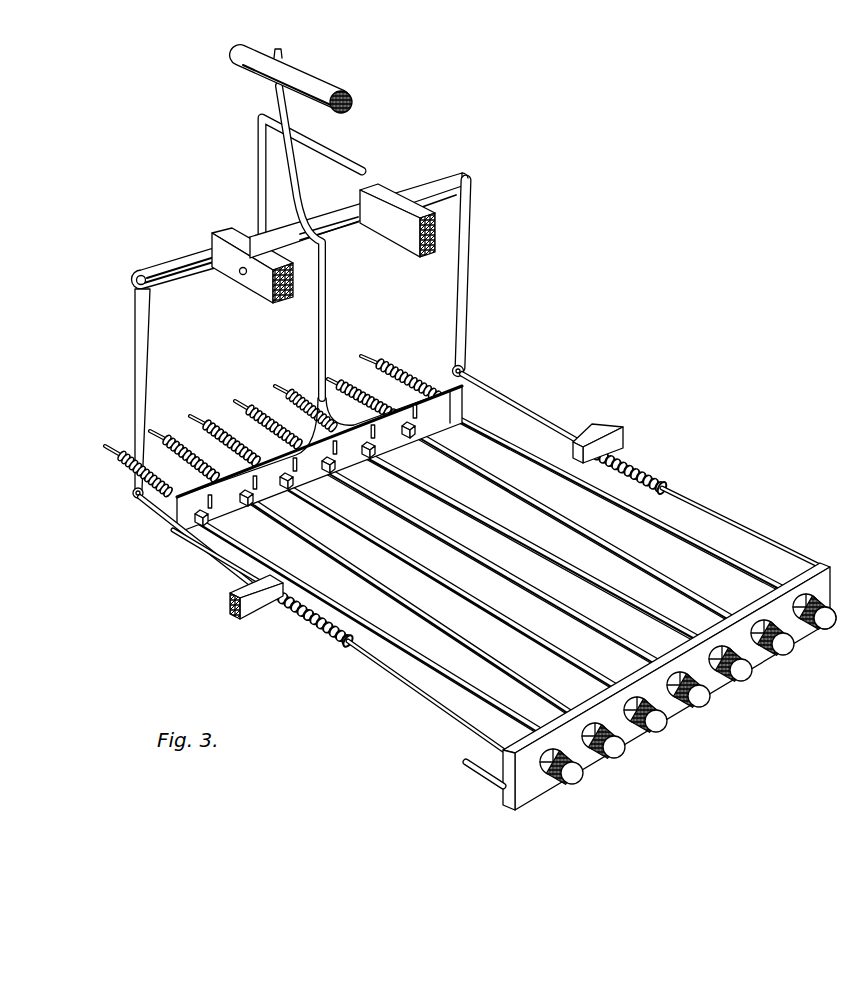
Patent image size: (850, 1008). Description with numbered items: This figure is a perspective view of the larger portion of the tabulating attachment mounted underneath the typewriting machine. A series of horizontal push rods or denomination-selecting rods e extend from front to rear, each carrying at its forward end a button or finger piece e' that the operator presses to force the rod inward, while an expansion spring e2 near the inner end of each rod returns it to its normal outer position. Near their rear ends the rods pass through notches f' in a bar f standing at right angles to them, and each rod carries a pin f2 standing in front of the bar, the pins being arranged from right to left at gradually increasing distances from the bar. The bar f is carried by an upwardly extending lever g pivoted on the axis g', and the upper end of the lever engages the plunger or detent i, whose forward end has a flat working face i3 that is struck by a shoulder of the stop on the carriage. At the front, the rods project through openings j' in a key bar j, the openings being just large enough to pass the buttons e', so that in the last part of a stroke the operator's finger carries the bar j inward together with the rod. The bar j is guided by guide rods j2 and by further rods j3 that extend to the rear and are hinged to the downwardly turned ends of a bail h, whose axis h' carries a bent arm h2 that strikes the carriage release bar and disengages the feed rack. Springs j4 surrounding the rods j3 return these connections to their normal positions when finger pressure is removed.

The push rods e is at (493, 573).
The button e' is at (818, 638).
The expansion spring e2 is at (428, 386).
The bar f is at (319, 483).
The notches f' is at (305, 474).
The pin f2 is at (300, 463).
The upwardly extending lever g is at (319, 273).
The axis g' is at (359, 275).
The bail h is at (151, 393).
The axis h' is at (213, 265).
The bent arm h2 is at (261, 185).
The plunger i is at (290, 80).
The flat working face i3 is at (361, 110).
The key bar j is at (652, 691).
The openings j' is at (686, 705).
The guide rods j2 is at (478, 773).
The guiding rods j3 is at (482, 562).
The springs j4 is at (444, 535).